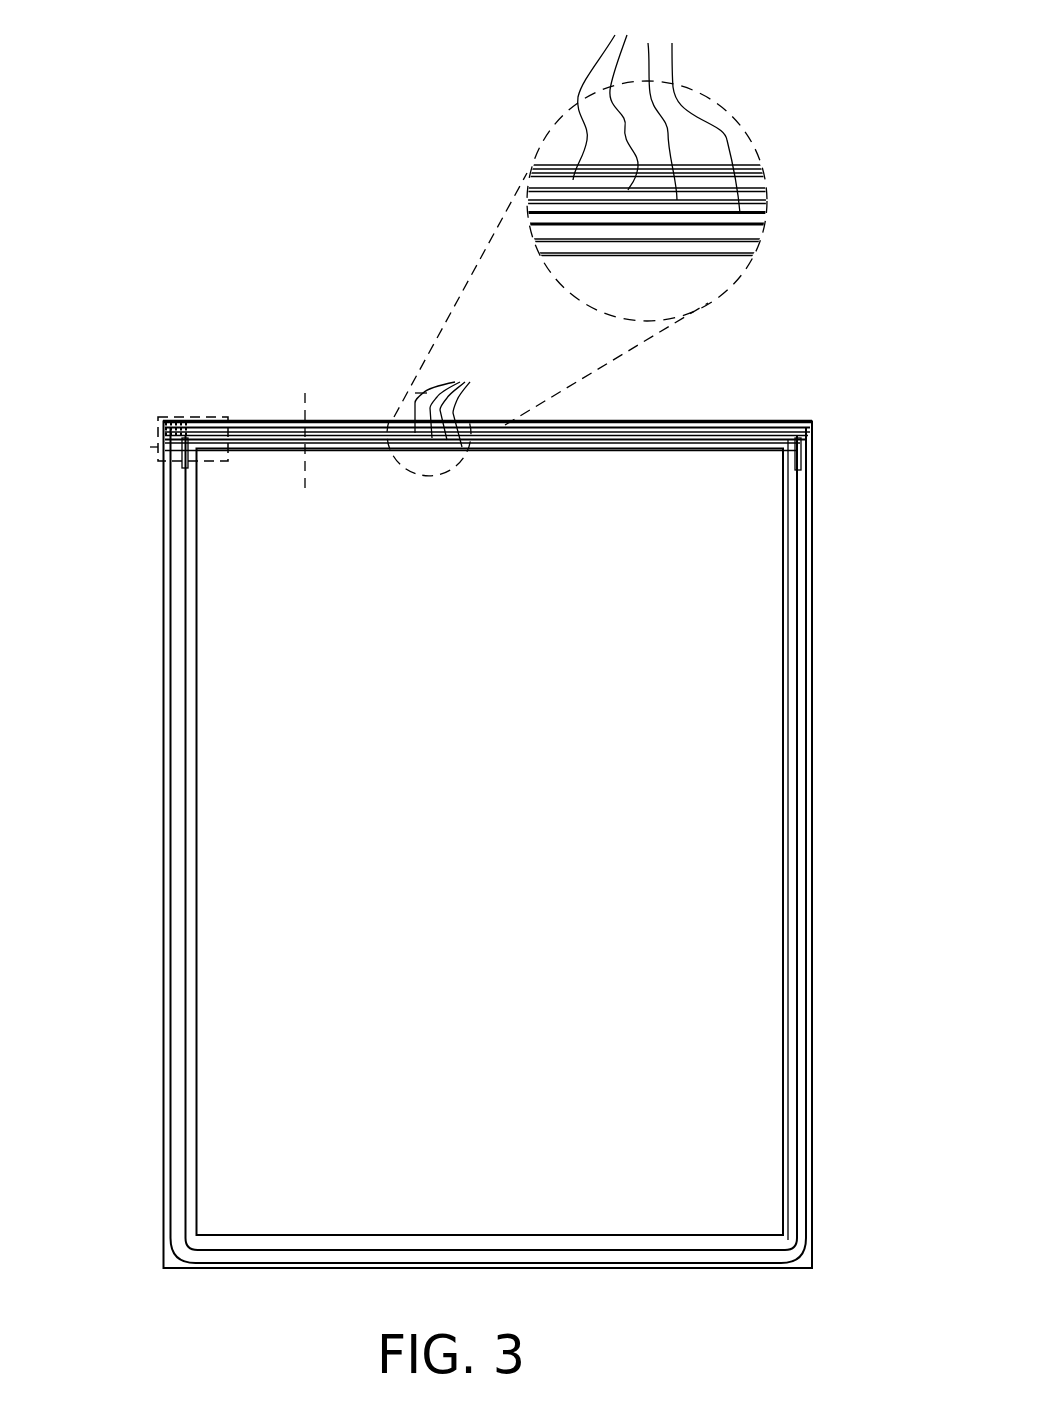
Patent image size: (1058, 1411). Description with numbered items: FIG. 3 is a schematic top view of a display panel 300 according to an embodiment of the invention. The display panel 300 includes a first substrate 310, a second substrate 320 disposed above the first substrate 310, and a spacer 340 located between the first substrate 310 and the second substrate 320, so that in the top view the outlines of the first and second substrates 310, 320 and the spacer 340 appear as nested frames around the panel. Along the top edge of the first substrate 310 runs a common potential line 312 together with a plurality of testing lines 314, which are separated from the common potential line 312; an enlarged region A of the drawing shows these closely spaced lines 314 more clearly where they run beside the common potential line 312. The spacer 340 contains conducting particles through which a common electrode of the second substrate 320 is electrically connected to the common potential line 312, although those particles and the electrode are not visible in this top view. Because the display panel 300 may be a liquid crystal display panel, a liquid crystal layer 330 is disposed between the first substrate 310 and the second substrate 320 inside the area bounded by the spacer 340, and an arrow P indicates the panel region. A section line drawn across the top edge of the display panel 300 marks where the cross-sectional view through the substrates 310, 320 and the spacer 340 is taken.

The display panel 300 is at (858, 1362).
The first substrate 310 is at (165, 1015).
The second substrate 320 is at (429, 845).
The common potential line 312 is at (543, 451).
The testing line 314 is at (581, 238).
The liquid crystal layer 330 is at (210, 935).
The spacer 340 is at (168, 706).
The enlarged region A is at (150, 448).
The pixel direction P is at (218, 842).